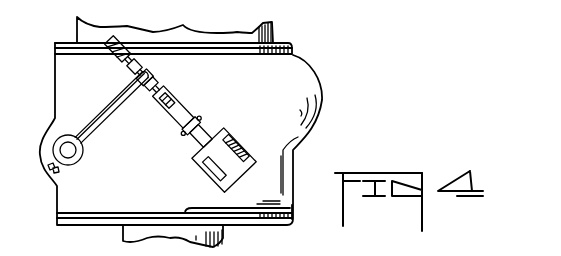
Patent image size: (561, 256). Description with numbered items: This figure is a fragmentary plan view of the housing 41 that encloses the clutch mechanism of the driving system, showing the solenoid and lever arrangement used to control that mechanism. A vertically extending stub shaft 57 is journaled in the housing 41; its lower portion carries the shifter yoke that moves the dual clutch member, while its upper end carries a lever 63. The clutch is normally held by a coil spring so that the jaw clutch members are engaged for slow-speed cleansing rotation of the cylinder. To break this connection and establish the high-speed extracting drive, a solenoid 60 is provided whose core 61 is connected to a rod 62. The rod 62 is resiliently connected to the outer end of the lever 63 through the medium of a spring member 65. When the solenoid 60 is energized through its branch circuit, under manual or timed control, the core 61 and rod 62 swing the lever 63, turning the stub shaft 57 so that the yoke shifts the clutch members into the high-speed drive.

The housing 41 is at (285, 73).
The stub shaft 57 is at (68, 156).
The solenoid 60 is at (229, 127).
The core 61 is at (206, 129).
The rod 62 is at (164, 85).
The lever 63 is at (111, 112).
The spring member 65 is at (117, 64).